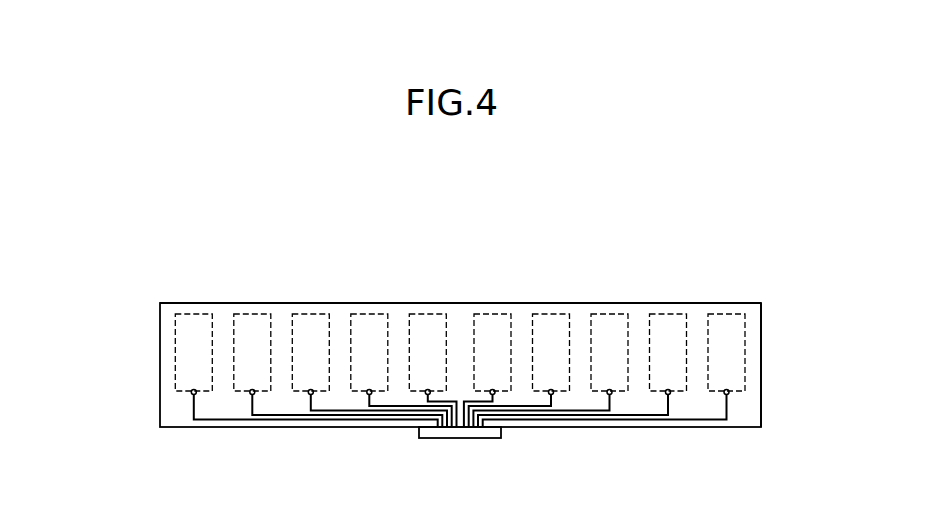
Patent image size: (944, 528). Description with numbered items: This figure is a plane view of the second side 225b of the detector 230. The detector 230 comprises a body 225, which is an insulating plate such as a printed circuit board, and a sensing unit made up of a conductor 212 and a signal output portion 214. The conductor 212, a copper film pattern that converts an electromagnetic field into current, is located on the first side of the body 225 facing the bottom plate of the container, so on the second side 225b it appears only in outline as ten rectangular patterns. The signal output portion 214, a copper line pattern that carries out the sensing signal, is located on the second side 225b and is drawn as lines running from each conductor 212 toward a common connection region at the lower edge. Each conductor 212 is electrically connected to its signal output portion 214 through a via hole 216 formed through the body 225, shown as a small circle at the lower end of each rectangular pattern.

The conductor 212 is at (175, 367).
The signal output portion 214 is at (209, 420).
The via hole 216 is at (191, 394).
The body 225 is at (495, 293).
The second side 225b is at (755, 398).
The detector 230 is at (678, 274).